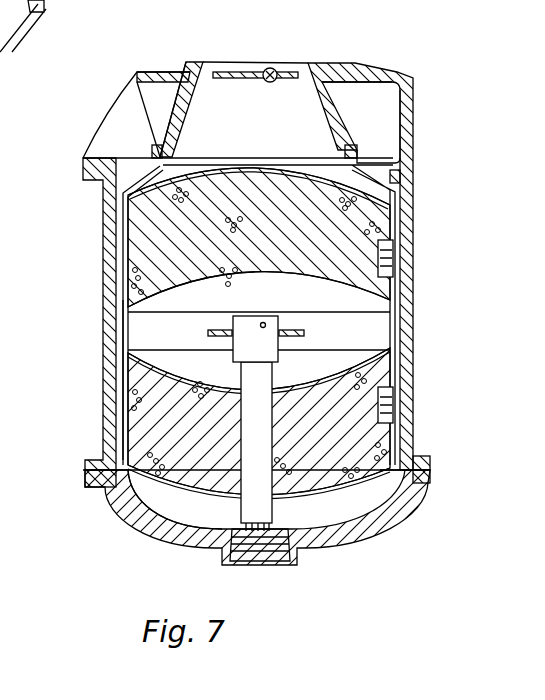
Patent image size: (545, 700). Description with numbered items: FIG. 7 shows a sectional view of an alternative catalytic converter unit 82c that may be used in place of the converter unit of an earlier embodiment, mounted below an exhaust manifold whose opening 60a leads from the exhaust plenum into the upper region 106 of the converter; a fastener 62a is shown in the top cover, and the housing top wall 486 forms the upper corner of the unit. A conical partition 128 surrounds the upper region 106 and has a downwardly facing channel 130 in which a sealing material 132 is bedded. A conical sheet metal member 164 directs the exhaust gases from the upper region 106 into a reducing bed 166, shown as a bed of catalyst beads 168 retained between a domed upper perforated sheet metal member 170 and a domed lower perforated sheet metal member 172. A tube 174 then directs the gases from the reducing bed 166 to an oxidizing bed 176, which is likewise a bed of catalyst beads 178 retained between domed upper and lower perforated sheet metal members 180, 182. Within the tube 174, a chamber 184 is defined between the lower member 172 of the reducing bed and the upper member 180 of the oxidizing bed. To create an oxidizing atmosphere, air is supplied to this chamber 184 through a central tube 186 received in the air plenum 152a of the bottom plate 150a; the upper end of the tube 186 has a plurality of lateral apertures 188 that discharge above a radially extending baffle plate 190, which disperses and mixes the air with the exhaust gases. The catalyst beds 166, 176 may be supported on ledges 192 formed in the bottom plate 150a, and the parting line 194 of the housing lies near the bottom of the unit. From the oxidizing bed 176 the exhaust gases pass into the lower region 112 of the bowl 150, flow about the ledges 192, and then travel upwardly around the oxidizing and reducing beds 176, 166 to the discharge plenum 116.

The opening 60a is at (212, 70).
The fastener 62a is at (256, 72).
The housing top wall 486 is at (416, 63).
The discharge plenum 116 is at (160, 73).
The sealing material 132 is at (160, 150).
The conical partition 128 is at (192, 115).
The downwardly facing channel 130 is at (150, 156).
The upper region 106 is at (285, 100).
The upper perforated sheet metal member 170 is at (302, 175).
The conical sheet metal member 164 is at (398, 178).
The reducing bed 166 is at (83, 232).
The catalyst beads 168 is at (155, 255).
The converter unit 82c is at (62, 300).
The tube 174 is at (150, 330).
The upper perforated sheet metal member 180 is at (150, 372).
The oxidizing bed 176 is at (45, 402).
The catalyst beads 178 is at (150, 423).
The ledges 192 is at (100, 463).
The lower region 112 is at (170, 518).
The lateral apertures 188 is at (263, 322).
The lower perforated sheet metal member 172 is at (180, 312).
The baffle plate 190 is at (306, 334).
The chamber 184 is at (405, 330).
The tube 186 is at (273, 400).
The parting line 194 is at (420, 463).
The lower perforated sheet metal member 182 is at (300, 490).
The air plenum 152a is at (270, 548).
The bottom plate 150a is at (340, 546).
The bowl 150 is at (0, 66).